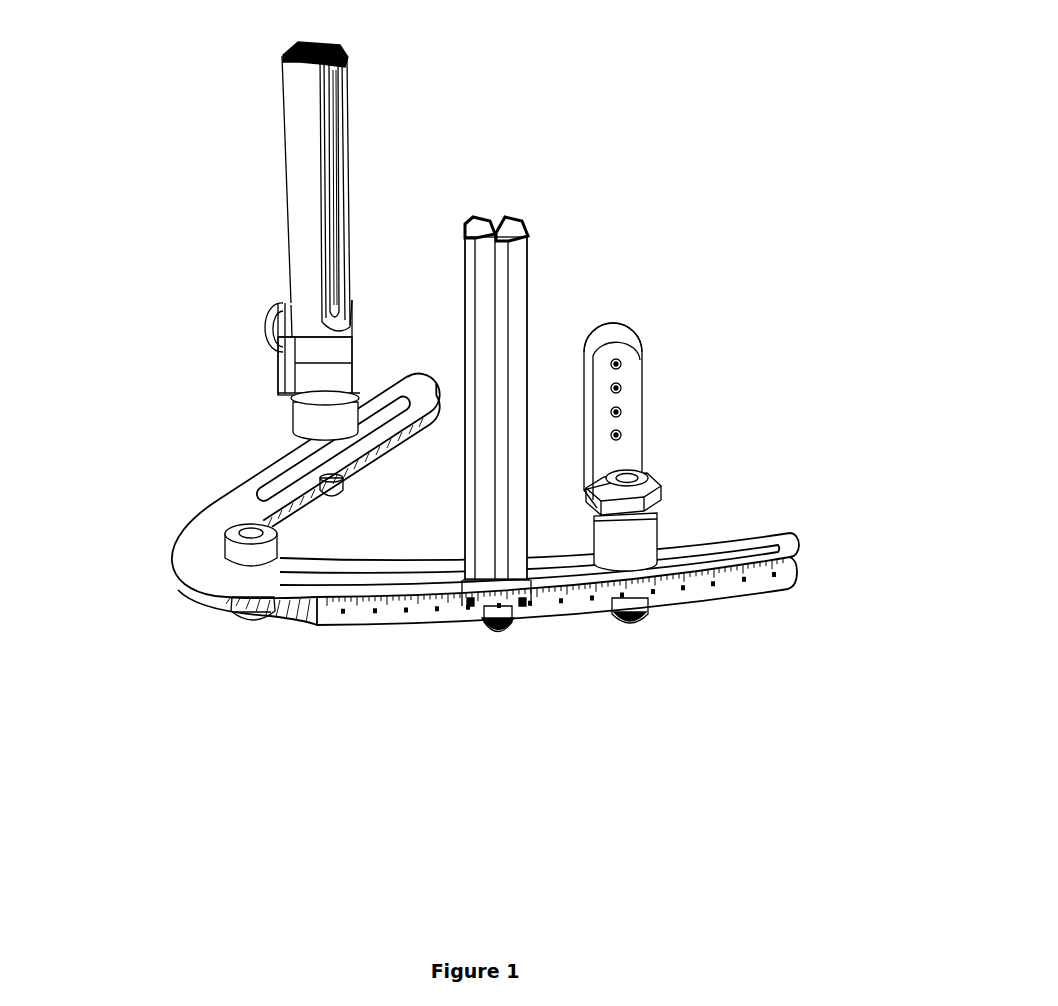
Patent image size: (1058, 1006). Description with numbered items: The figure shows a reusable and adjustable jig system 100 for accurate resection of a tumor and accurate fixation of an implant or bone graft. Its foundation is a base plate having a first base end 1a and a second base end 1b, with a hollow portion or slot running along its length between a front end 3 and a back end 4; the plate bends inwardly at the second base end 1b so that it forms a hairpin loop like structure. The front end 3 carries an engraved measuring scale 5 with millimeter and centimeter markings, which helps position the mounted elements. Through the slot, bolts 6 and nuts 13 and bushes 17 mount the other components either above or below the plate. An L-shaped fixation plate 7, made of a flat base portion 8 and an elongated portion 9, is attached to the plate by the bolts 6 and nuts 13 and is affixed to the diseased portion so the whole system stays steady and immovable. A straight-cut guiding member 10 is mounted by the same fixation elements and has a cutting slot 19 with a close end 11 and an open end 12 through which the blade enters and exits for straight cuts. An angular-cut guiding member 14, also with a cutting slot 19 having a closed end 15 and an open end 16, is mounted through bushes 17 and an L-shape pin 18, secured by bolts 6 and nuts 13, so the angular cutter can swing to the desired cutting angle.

The jig system 100 is at (501, 447).
The first base end 1a is at (405, 382).
The second base end 1b is at (226, 600).
The front end 3 is at (505, 574).
The back end 4 is at (300, 492).
The measuring scale 5 is at (380, 626).
The bolt 6 is at (298, 383).
The fixation plate 7 is at (678, 368).
The flat base portion 8 is at (655, 497).
The elongated portion 9 is at (585, 328).
The straight-cut guiding member 10 is at (530, 365).
The close end 11 is at (509, 622).
The open end 12 is at (546, 460).
The nut 13 is at (347, 479).
The angular-cut guiding member 14 is at (278, 173).
The closed end 15 is at (348, 308).
The open end 16 is at (345, 56).
The bush 17 is at (292, 428).
The L-shape pin 18 is at (293, 363).
The cutting slot 19 is at (340, 152).